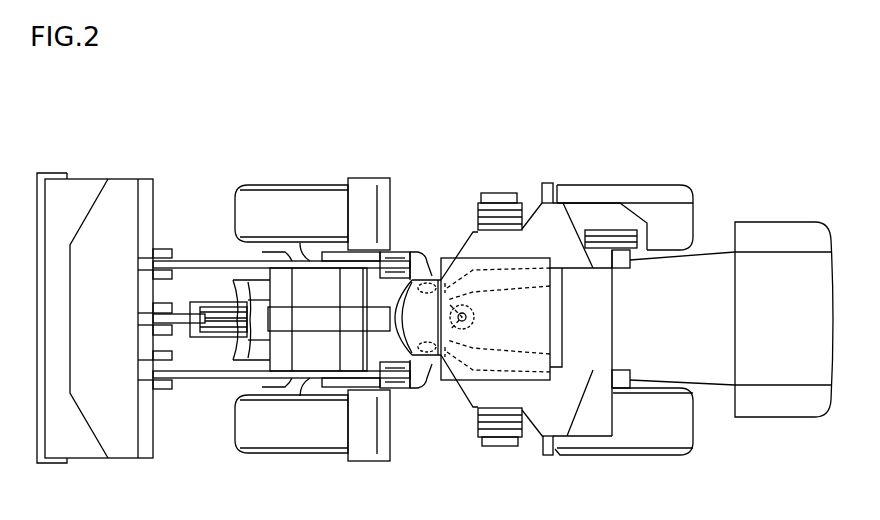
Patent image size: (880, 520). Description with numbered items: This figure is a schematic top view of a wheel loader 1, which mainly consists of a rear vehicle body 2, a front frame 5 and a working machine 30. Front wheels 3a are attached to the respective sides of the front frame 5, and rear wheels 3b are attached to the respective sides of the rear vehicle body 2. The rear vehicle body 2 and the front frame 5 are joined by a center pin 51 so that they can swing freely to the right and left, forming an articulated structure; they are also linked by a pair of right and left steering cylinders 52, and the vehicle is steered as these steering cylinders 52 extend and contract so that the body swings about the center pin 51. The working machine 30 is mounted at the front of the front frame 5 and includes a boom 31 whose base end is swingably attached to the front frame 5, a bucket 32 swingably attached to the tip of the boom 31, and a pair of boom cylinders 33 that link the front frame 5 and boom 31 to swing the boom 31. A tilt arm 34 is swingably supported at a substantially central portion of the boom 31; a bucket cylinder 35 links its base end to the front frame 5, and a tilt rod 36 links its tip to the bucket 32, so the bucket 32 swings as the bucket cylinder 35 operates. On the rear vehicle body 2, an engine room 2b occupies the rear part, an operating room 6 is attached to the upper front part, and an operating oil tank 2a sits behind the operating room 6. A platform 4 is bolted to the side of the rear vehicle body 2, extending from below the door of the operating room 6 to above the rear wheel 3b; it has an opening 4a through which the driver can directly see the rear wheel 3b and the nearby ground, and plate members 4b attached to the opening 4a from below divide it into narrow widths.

The wheel loader 1 is at (455, 123).
The rear vehicle body 2 is at (712, 365).
The operating oil tank 2a is at (592, 340).
The engine room 2b is at (790, 303).
The front wheels 3a is at (273, 202).
The rear wheels 3b is at (668, 202).
The platform 4 is at (548, 217).
The opening 4a is at (590, 240).
The plate members 4b is at (622, 246).
The front frame 5 is at (414, 262).
The operating room 6 is at (467, 272).
The working machine 30 is at (175, 198).
The boom 31 is at (212, 268).
The bucket 32 is at (118, 193).
The boom cylinders 33 is at (337, 378).
The tilt arm 34 is at (212, 346).
The bucket cylinder 35 is at (315, 320).
The tilt rod 36 is at (178, 318).
The center pin 51 is at (461, 330).
The steering cylinders 52 is at (498, 280).